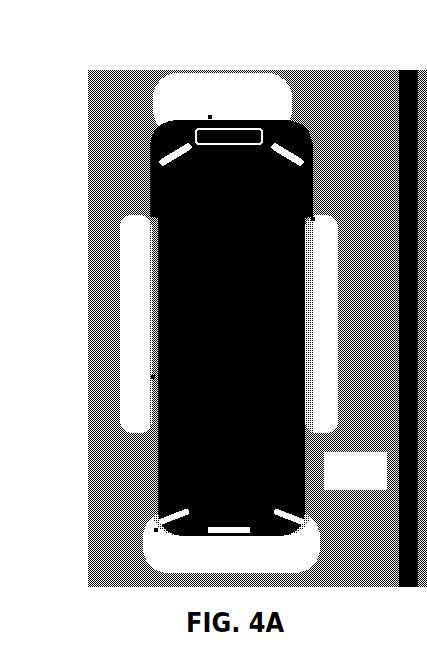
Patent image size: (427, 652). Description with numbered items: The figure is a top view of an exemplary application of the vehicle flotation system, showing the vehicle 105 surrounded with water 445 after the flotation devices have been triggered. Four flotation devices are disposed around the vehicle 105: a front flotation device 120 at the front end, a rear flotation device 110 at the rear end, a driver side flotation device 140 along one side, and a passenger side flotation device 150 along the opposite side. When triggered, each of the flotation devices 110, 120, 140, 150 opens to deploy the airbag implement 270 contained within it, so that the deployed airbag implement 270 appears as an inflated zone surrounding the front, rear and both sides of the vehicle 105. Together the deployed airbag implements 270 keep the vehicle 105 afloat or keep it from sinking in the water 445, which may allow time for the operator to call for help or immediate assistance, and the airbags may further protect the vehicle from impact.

The vehicle 105 is at (157, 180).
The rear flotation device 110 is at (155, 530).
The front flotation device 120 is at (210, 100).
The driver side flotation device 140 is at (141, 385).
The passenger side flotation device 150 is at (316, 203).
The airbag implement 270 is at (229, 324).
The water 445 is at (355, 471).